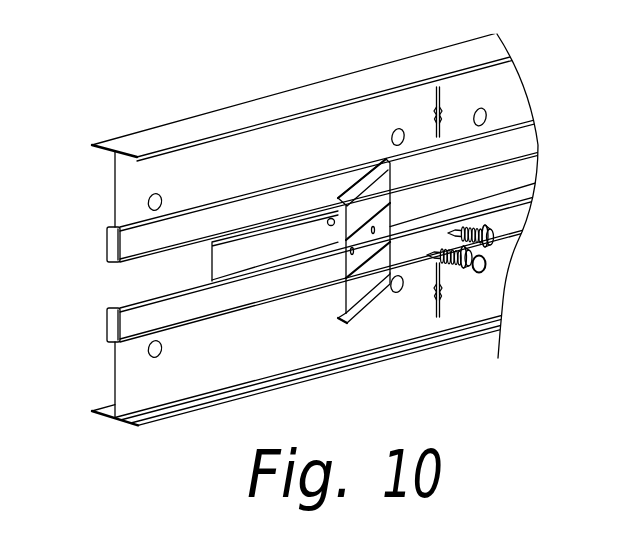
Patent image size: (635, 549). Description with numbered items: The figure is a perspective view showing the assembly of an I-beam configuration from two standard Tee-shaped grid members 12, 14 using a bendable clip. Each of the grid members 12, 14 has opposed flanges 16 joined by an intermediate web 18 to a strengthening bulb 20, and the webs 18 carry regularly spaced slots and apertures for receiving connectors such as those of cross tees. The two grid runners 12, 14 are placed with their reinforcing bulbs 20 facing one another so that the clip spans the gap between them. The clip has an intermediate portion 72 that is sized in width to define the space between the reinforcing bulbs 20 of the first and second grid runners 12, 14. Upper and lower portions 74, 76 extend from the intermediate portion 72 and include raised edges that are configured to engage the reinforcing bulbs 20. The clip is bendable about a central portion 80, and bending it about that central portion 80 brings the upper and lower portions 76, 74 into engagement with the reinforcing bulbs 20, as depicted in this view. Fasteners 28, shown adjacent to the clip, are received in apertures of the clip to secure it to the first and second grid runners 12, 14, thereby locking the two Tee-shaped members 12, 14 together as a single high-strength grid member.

The Tee-shaped grid member 12 is at (123, 379).
The Tee-shaped grid member 14 is at (120, 175).
The flange 16 is at (92, 146).
The web 18 is at (275, 161).
The strengthening bulb 20 is at (107, 246).
The fastener 28 is at (487, 238).
The intermediate portion 72 is at (370, 245).
The upper portion 74 is at (353, 302).
The lower portion 76 is at (371, 202).
The central portion 80 is at (399, 305).